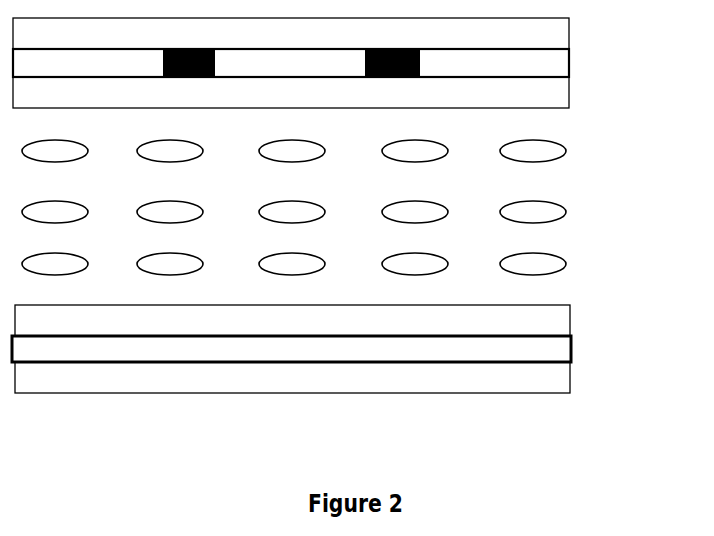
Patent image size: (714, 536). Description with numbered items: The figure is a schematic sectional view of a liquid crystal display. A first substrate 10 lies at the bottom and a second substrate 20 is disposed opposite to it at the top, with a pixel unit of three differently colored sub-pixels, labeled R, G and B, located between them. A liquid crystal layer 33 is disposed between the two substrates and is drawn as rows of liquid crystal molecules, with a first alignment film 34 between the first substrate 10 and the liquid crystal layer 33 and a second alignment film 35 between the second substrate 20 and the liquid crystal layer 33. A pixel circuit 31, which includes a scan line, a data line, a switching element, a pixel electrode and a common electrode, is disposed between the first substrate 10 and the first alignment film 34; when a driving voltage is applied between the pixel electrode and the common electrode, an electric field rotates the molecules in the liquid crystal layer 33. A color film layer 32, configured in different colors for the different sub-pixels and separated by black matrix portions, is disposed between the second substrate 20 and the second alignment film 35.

The first substrate 10 is at (570, 380).
The second substrate 20 is at (569, 30).
The pixel circuit 31 is at (570, 348).
The color film layer 32 is at (569, 62).
The liquid crystal layer 33 is at (557, 193).
The first alignment film 34 is at (570, 315).
The second alignment film 35 is at (569, 92).